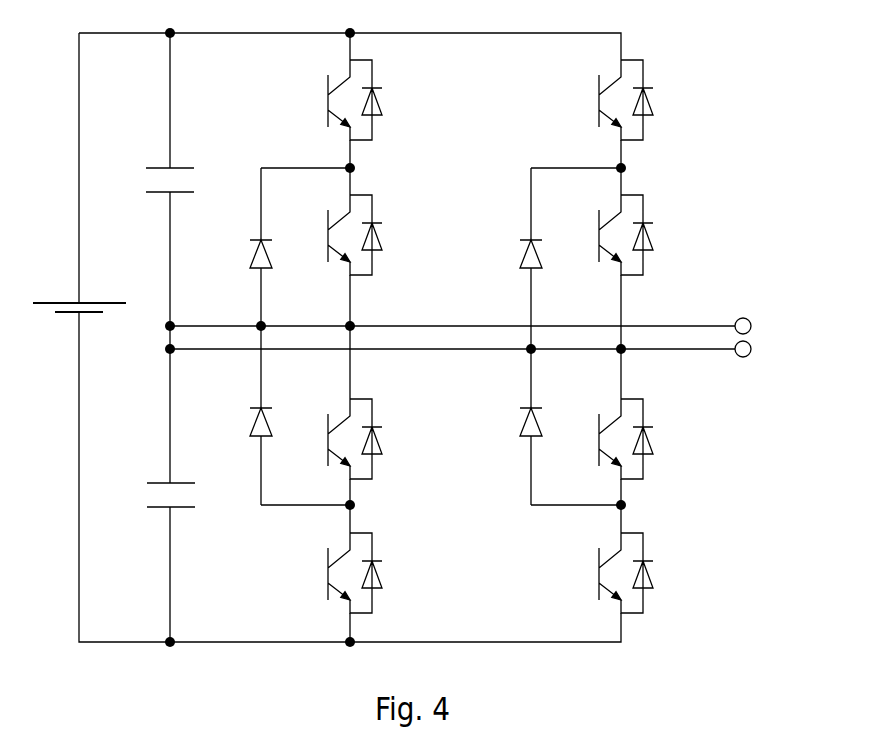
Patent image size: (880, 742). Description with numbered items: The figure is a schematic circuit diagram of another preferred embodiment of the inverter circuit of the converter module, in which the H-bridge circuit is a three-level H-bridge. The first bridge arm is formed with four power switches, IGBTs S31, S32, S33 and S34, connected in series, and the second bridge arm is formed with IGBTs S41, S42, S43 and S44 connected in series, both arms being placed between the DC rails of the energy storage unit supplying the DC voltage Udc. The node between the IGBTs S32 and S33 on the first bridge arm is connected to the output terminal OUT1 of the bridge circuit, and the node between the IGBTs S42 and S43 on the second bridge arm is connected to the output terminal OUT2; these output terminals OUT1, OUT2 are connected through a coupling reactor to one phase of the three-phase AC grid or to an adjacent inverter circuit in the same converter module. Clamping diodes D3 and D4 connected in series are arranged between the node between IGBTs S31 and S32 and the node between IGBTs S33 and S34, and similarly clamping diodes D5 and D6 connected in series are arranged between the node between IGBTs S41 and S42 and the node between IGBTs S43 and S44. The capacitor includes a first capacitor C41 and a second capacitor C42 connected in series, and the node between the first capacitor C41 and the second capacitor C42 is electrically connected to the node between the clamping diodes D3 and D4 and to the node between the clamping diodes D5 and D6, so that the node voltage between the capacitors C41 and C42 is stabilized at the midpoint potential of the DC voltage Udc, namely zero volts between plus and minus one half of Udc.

The IGBT S31 is at (378, 100).
The IGBT S32 is at (378, 235).
The IGBT S33 is at (378, 439).
The IGBT S34 is at (378, 573).
The IGBT S41 is at (648, 100).
The IGBT S42 is at (648, 235).
The IGBT S43 is at (648, 439).
The IGBT S44 is at (648, 573).
The clamping diode D3 is at (244, 253).
The clamping diode D4 is at (244, 422).
The clamping diode D5 is at (516, 254).
The clamping diode D6 is at (516, 422).
The first capacitor C41 is at (153, 163).
The second capacitor C42 is at (153, 478).
The DC voltage Udc is at (73, 285).
The output terminal OUT1 is at (468, 309).
The output terminal OUT2 is at (468, 366).